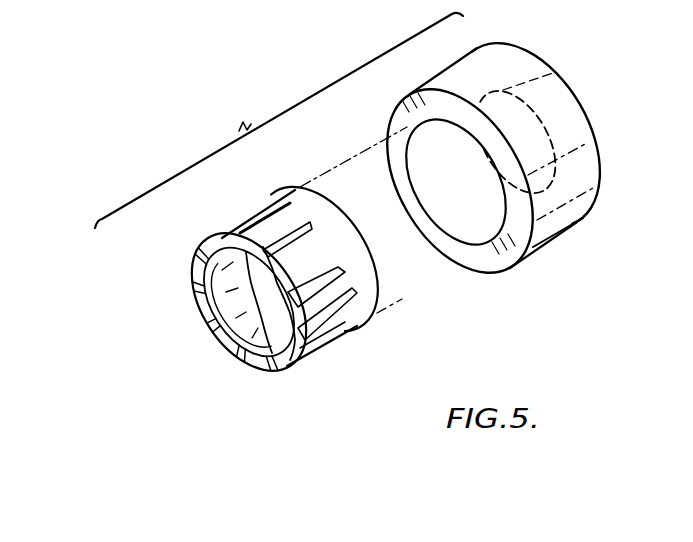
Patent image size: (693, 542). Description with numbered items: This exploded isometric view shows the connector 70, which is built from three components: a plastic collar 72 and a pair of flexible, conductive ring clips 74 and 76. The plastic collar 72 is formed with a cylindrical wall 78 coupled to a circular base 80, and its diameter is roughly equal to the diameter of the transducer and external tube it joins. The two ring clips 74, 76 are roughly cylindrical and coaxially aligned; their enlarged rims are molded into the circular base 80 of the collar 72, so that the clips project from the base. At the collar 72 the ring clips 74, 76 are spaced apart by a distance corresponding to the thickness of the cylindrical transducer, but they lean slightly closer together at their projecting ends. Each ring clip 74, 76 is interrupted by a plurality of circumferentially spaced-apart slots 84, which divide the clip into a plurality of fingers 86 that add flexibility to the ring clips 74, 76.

The connector 70 is at (279, 120).
The plastic collar 72 is at (604, 147).
The ring clip 74 is at (197, 264).
The ring clip 76 is at (217, 322).
The cylindrical wall 78 is at (537, 249).
The circular base 80 is at (553, 72).
The slots 84 is at (350, 323).
The fingers 86 is at (239, 228).